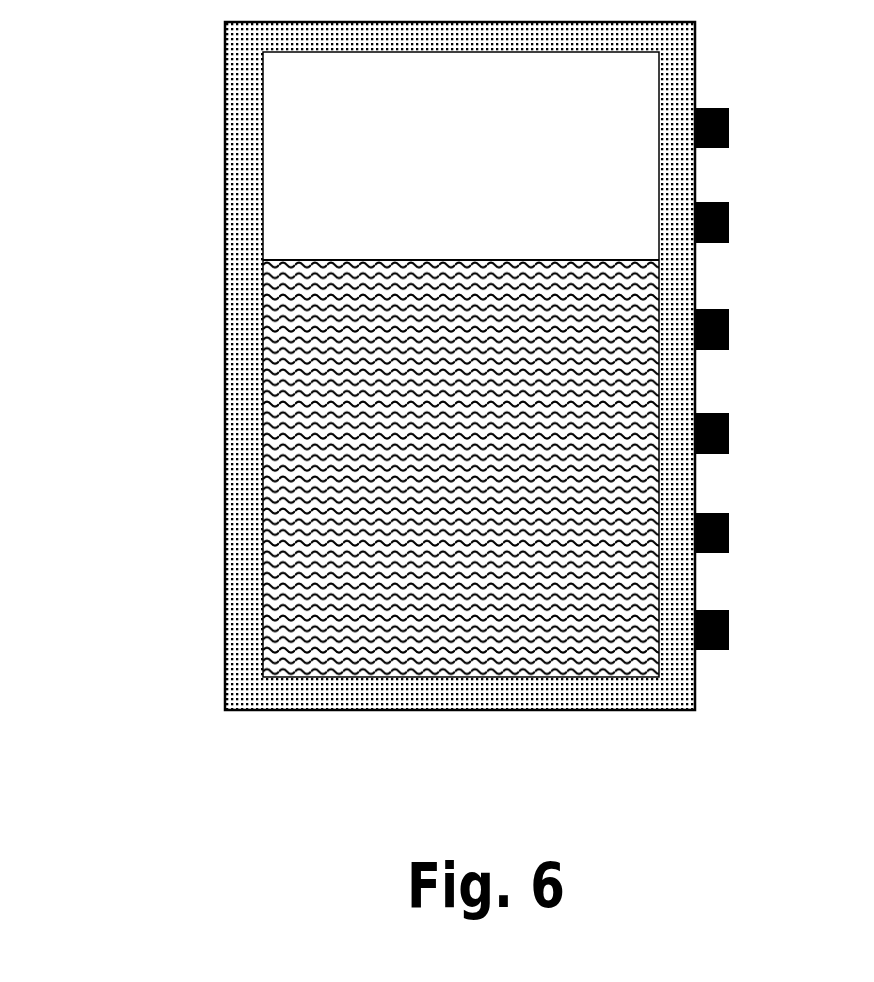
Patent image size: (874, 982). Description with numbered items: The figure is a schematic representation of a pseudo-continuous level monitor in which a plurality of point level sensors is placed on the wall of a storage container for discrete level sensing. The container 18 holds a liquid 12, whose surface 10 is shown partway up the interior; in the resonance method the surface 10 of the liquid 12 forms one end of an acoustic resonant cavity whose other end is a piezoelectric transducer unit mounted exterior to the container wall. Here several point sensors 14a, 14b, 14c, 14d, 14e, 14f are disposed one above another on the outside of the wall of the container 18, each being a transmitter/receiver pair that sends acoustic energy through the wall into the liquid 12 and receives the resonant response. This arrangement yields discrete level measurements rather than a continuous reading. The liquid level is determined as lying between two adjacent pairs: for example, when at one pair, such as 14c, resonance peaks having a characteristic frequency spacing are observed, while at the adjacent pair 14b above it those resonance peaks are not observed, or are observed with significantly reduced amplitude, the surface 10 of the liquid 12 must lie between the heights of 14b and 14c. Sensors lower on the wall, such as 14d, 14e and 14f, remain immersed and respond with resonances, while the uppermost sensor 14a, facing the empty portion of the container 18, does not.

The surface 10 is at (447, 262).
The liquid 12 is at (370, 389).
The point level sensor 14a is at (774, 119).
The point level sensor 14b is at (775, 219).
The point level sensor 14c is at (775, 332).
The point level sensor 14d is at (775, 429).
The point level sensor 14e is at (775, 539).
The point level sensor 14f is at (770, 634).
The container 18 is at (353, 692).